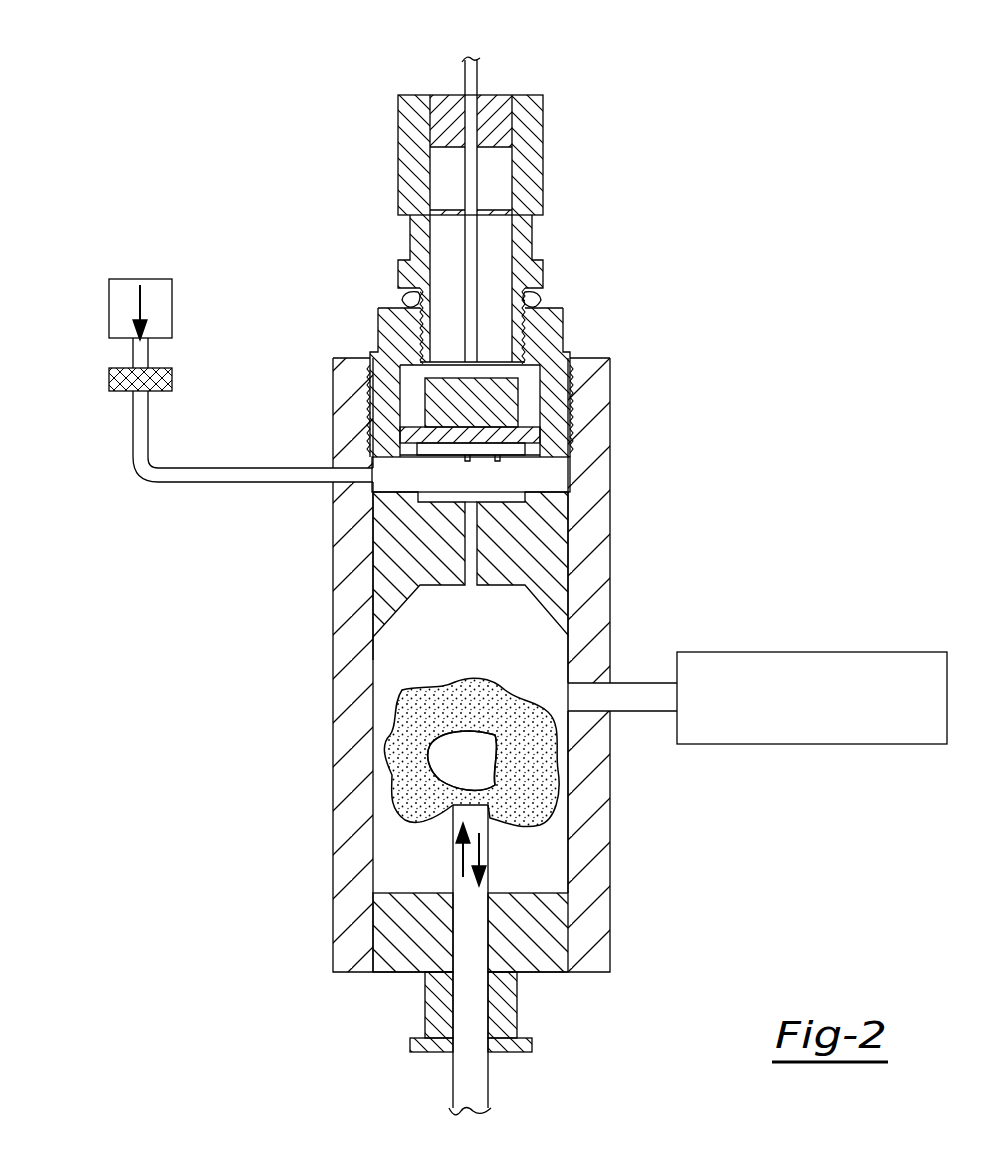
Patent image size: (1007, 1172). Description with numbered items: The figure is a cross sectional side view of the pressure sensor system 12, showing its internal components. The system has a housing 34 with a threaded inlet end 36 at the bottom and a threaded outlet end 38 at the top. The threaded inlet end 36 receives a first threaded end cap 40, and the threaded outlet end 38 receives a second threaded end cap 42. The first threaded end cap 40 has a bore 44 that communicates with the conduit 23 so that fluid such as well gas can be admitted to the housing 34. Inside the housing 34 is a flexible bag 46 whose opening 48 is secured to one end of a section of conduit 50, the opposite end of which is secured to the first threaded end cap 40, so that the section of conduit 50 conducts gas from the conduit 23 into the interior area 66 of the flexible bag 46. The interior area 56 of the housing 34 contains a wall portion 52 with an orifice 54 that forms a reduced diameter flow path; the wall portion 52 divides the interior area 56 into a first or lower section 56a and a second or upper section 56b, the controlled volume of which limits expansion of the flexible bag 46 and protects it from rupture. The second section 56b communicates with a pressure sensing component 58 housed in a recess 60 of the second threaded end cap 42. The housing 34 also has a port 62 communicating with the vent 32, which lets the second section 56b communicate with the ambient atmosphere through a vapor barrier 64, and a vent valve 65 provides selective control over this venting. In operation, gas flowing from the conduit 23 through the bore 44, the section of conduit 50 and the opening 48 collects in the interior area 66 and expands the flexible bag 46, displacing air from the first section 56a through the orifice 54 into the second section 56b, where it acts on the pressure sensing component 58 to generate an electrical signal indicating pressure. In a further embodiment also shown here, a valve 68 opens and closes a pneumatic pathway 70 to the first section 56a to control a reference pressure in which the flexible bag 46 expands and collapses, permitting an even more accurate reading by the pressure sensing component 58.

The pressure sensor system 12 is at (228, 118).
The conduit 23 is at (462, 1078).
The vent 32 is at (176, 478).
The housing 34 is at (595, 545).
The threaded inlet end 36 is at (600, 898).
The threaded outlet end 38 is at (585, 352).
The first threaded end cap 40 is at (510, 1020).
The second threaded end cap 42 is at (575, 306).
The bore 44 is at (467, 1018).
The flexible bag 46 is at (412, 763).
The opening 48 is at (418, 806).
The section of conduit 50 is at (450, 878).
The wall portion 52 is at (388, 568).
The orifice 54 is at (475, 502).
The interior area 56 is at (392, 853).
The first section 56a is at (408, 677).
The second section 56b is at (410, 470).
The pressure sensing component 58 is at (510, 430).
The recess 60 is at (440, 408).
The port 62 is at (362, 482).
The vapor barrier 64 is at (108, 378).
The vent valve 65 is at (110, 300).
The interior area of the flexible bag 66 is at (523, 745).
The valve 68 is at (887, 744).
The pneumatic pathway 70 is at (635, 682).